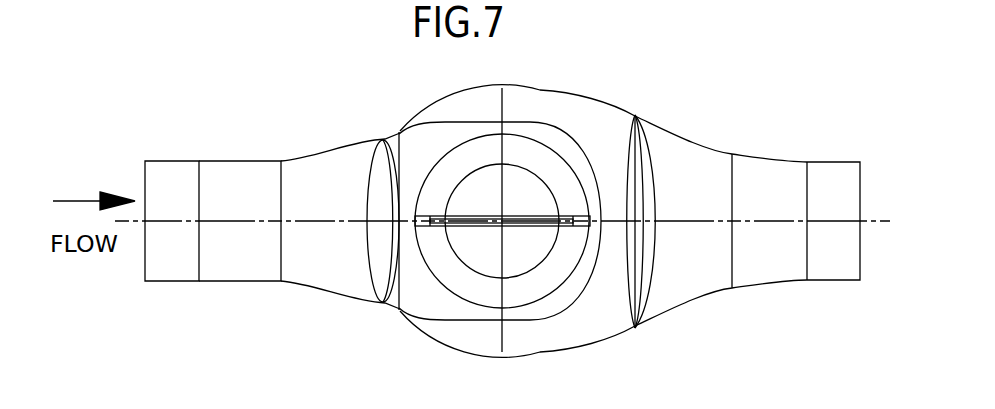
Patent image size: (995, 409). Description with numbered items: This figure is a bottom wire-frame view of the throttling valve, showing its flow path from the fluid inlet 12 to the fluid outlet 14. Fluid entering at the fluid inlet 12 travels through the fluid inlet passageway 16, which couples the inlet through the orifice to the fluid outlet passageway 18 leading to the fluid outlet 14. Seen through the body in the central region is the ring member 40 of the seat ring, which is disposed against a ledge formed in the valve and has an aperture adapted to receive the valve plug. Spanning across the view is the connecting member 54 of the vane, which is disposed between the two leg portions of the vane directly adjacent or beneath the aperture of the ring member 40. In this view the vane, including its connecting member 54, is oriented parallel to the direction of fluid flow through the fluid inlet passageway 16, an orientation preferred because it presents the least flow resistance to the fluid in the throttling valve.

The fluid inlet 12 is at (144, 191).
The fluid outlet 14 is at (862, 185).
The fluid inlet passageway 16 is at (240, 177).
The fluid outlet passageway 18 is at (764, 182).
The ring member 40 is at (477, 155).
The connecting member 54 is at (533, 218).